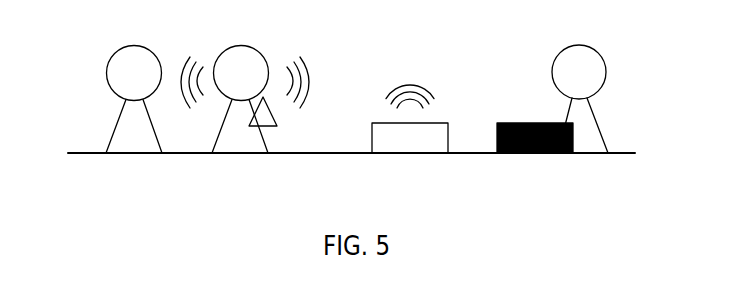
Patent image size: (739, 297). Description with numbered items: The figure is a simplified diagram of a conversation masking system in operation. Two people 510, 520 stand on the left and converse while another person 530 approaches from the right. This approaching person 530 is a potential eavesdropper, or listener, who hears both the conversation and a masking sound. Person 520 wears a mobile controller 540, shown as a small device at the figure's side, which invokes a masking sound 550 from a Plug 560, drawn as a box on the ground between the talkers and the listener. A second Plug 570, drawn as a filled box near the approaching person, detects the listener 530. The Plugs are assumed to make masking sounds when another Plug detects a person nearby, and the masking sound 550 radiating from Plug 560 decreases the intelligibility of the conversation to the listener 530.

The person 510 is at (107, 60).
The person 520 is at (245, 45).
The person (listener) 530 is at (605, 75).
The mobile controller 540 is at (274, 115).
The masking sound 550 is at (425, 83).
The Plug 560 is at (417, 154).
The Plug 570 is at (552, 153).